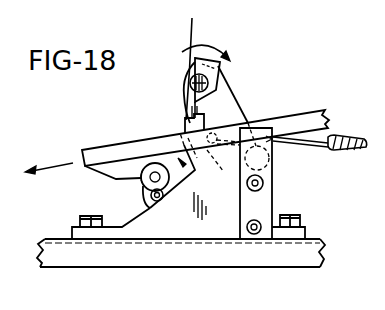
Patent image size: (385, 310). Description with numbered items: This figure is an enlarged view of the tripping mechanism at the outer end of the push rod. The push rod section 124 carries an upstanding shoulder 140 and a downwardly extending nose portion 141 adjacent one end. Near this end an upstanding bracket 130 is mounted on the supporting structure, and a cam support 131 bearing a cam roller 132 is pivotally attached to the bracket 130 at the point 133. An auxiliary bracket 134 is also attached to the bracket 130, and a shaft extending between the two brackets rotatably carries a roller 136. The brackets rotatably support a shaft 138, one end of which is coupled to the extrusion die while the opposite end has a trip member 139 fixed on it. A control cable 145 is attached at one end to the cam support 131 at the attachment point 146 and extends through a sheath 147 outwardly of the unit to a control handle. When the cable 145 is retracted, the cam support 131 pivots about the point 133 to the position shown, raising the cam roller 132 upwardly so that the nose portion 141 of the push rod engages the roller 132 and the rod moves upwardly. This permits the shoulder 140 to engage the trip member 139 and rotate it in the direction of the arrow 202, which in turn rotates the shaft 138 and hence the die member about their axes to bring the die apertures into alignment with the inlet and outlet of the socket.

The push rod section 124 is at (316, 112).
The upstanding bracket 130 is at (224, 108).
The cam support 131 is at (184, 158).
The cam roller 132 is at (147, 167).
The pivot point 133 is at (157, 201).
The auxiliary bracket 134 is at (262, 238).
The roller 136 is at (277, 182).
The shaft 138 is at (191, 60).
The trip member 139 is at (218, 72).
The upstanding shoulder 140 is at (188, 126).
The nose portion 141 is at (120, 180).
The control cable 145 is at (300, 148).
The cable attachment point 146 is at (217, 176).
The sheath 147 is at (348, 138).
The arrow 202 is at (218, 36).